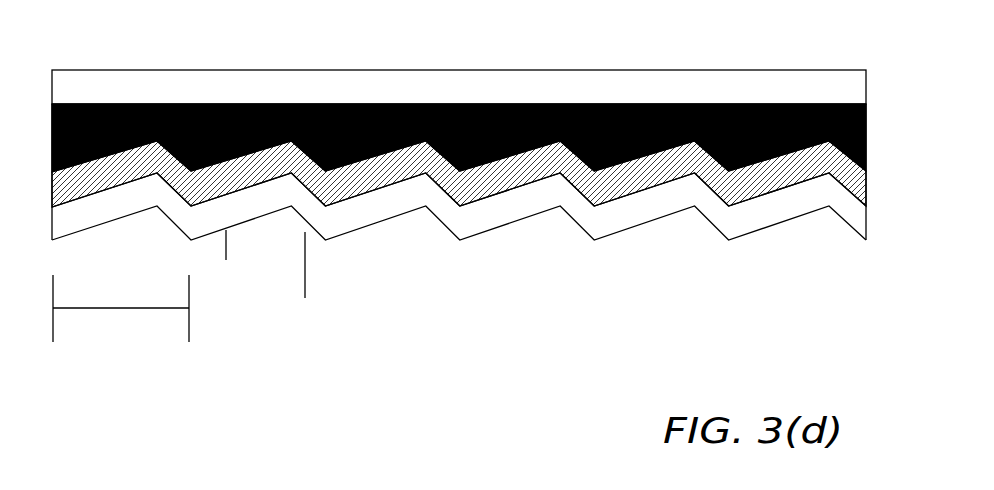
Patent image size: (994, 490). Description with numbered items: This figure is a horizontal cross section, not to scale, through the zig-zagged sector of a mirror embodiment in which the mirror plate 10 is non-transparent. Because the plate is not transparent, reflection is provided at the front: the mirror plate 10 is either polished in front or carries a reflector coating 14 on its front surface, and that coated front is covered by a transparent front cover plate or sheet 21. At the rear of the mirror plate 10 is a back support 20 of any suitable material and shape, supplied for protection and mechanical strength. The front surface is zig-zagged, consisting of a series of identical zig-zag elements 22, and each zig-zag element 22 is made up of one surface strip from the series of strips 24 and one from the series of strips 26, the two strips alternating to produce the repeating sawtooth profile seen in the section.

The mirror plate 10 is at (787, 104).
The back support 20 is at (459, 88).
The reflector coating 14 is at (622, 183).
The transparent front cover plate 21 is at (753, 210).
The zig-zag element 22 is at (121, 305).
The surface strip 24 is at (237, 268).
The surface strip 26 is at (304, 288).